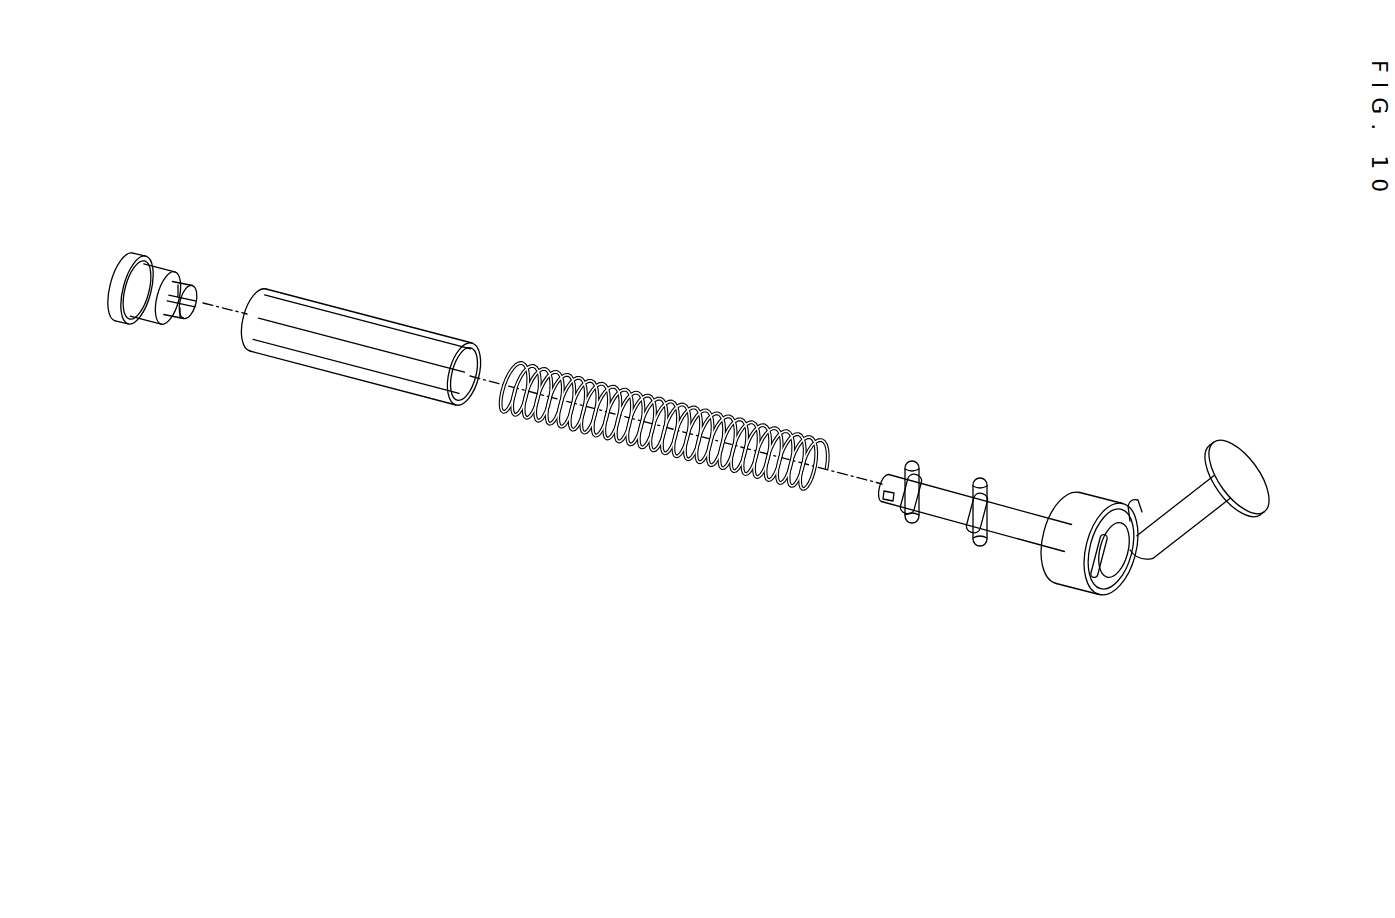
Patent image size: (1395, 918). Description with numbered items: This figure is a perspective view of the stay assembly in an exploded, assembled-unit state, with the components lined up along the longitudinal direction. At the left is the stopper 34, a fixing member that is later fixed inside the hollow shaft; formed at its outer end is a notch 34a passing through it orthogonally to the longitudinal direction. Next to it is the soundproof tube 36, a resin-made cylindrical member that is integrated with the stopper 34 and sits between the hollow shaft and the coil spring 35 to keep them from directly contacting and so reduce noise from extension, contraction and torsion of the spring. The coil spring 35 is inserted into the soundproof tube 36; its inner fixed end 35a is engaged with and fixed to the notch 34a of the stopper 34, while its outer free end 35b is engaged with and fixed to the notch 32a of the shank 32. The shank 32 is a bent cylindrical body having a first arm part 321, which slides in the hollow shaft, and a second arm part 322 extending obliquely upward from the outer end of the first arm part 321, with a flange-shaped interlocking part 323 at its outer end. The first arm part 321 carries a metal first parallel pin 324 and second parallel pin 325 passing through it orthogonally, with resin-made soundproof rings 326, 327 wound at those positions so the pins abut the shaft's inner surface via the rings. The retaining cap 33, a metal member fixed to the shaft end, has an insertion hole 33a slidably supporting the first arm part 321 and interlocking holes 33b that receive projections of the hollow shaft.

The shank 32 is at (1082, 545).
The notch 32a is at (884, 501).
The first arm part 321 is at (960, 536).
The second arm part 322 is at (1185, 535).
The interlocking part 323 is at (1244, 466).
The first parallel pin 324 is at (921, 475).
The second parallel pin 325 is at (992, 492).
The soundproof ring 326 is at (913, 498).
The soundproof ring 327 is at (974, 517).
The retaining cap 33 is at (1116, 543).
The insertion hole 33a is at (1112, 564).
The interlocking hole 33b is at (1141, 520).
The stopper 34 is at (154, 307).
The notch 34a is at (176, 307).
The coil spring 35 is at (657, 446).
The fixed end 35a is at (495, 386).
The free end 35b is at (828, 470).
The soundproof tube 36 is at (369, 327).